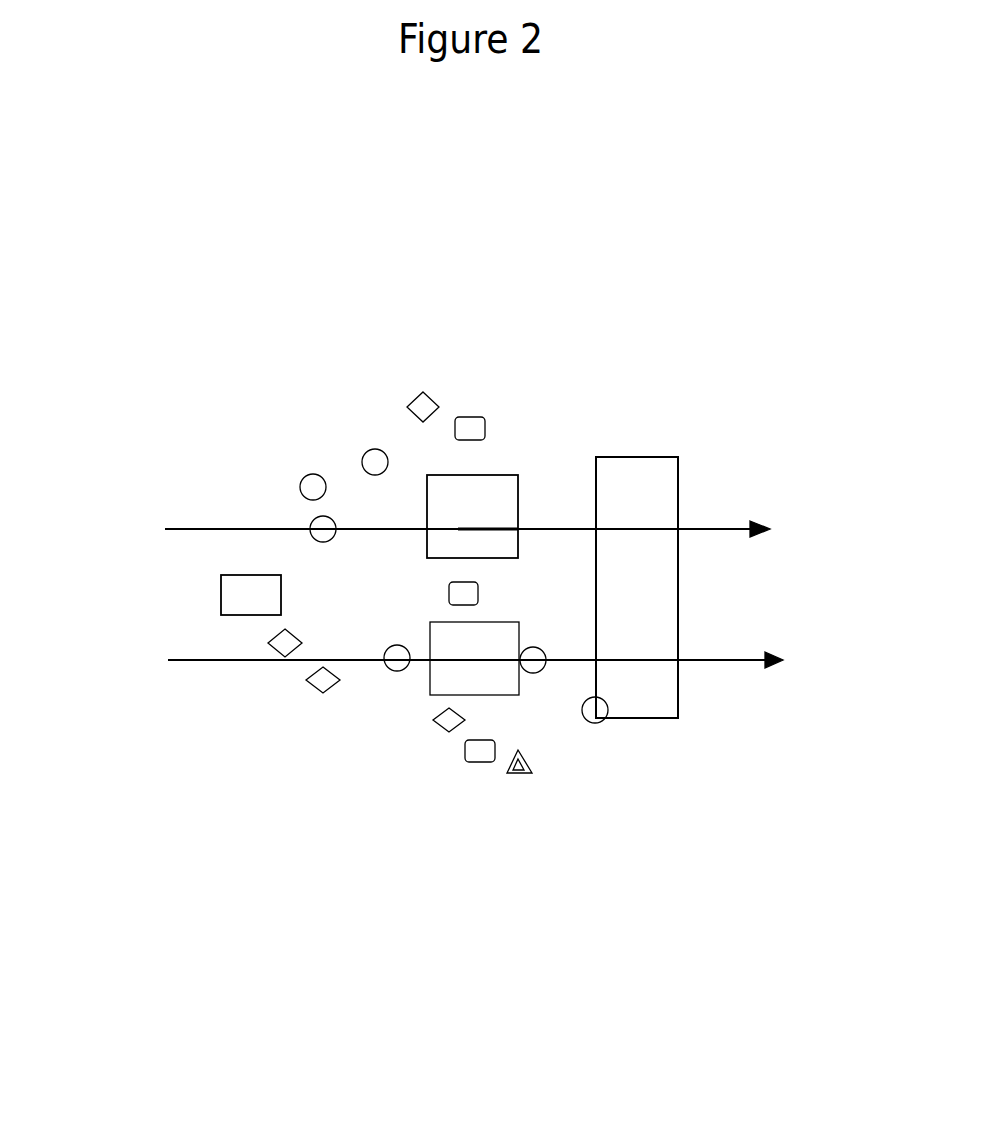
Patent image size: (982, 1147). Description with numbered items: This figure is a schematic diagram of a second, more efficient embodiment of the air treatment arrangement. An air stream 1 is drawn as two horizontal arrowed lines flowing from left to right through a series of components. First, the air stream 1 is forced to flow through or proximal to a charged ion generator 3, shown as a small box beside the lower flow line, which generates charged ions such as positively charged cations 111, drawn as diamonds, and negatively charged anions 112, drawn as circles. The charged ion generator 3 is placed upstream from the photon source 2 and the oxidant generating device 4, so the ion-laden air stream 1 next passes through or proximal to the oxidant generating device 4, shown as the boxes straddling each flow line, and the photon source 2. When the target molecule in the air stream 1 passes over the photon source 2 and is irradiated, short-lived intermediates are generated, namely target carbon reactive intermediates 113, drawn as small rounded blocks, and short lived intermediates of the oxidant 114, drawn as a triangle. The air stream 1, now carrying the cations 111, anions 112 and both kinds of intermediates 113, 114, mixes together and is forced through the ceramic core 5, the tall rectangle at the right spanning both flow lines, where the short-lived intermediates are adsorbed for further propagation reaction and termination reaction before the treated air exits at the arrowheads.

The air stream 1 is at (703, 528).
The photon source 2 is at (508, 642).
The charged ion generator 3 is at (245, 578).
The oxidant generating device 4 is at (458, 492).
The ceramic core 5 is at (635, 473).
The positively charged cations 111 is at (317, 685).
The negatively charged anions 112 is at (397, 660).
The target carbon reactive intermediates 113 is at (483, 762).
The short lived intermediates of the oxidant 114 is at (515, 773).